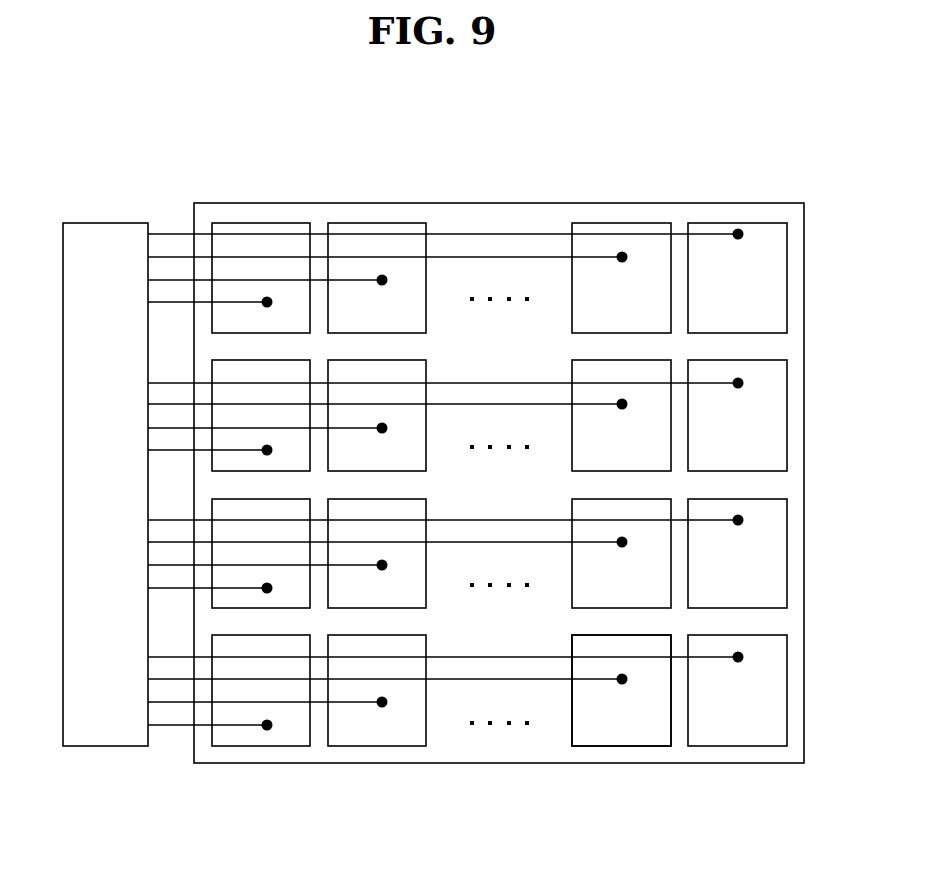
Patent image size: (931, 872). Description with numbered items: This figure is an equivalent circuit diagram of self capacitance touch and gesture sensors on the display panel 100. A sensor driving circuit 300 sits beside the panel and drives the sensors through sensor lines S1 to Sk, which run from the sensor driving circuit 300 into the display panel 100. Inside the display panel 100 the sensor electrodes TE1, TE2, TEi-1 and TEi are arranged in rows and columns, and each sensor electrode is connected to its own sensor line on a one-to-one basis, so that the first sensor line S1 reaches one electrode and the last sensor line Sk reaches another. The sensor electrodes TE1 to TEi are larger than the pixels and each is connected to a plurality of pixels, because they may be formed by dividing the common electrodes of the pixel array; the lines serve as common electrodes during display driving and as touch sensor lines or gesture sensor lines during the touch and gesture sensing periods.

The display panel 100 is at (732, 203).
The sensor driving circuit 300 is at (83, 490).
The sensor line S1 is at (179, 230).
The sensor line Sk is at (182, 727).
The sensor electrode TE1 is at (260, 222).
The sensor electrode TE2 is at (376, 222).
The sensor electrode TEi-1 is at (623, 746).
The sensor electrode TEi is at (739, 746).